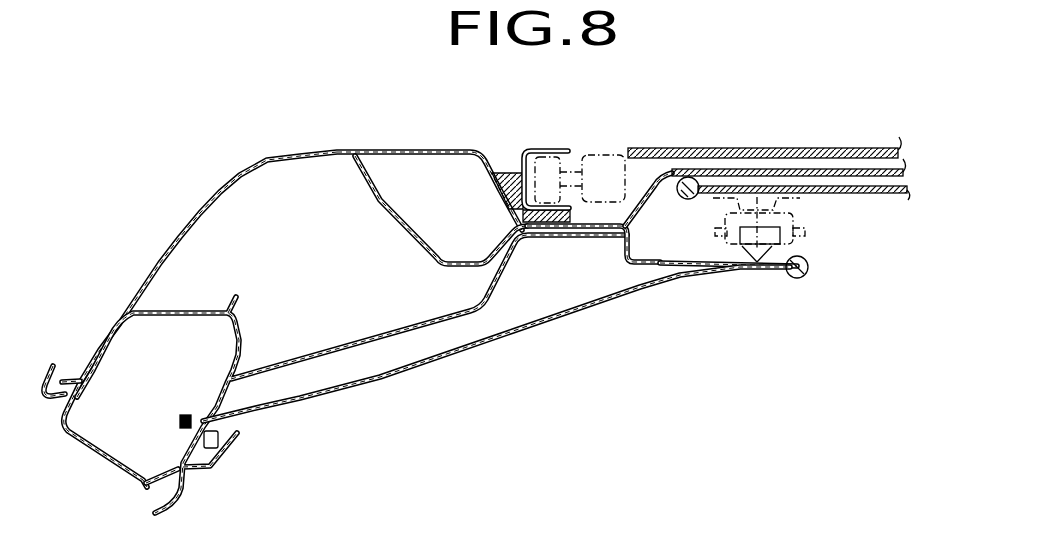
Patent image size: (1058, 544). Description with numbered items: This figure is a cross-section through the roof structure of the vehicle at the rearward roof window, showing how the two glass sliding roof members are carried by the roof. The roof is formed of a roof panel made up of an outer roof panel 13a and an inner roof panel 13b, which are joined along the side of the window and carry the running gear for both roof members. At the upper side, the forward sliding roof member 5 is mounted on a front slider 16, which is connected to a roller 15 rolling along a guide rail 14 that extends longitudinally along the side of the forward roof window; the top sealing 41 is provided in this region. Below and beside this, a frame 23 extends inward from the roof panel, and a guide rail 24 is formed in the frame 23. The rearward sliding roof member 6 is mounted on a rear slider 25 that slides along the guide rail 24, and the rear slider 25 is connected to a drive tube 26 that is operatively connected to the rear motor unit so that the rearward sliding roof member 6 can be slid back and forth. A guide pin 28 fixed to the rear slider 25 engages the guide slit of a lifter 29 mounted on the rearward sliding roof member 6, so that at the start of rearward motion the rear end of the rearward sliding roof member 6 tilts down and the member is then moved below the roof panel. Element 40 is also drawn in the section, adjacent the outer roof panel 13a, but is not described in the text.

The forward sliding roof member 5 is at (847, 148).
The rearward sliding roof member 6 is at (905, 193).
The outer roof panel 13a is at (303, 156).
The inner roof panel 13b is at (336, 347).
The guide rail 14 is at (555, 150).
The roller 15 is at (537, 158).
The front slider 16 is at (620, 155).
The frame 23 is at (626, 258).
The guide rail 24 is at (723, 270).
The rear slider 25 is at (810, 247).
The drive tube 26 is at (753, 253).
The guide pin 28 is at (716, 233).
The lifter 29 is at (800, 211).
The reinforcing panel 40 is at (408, 231).
The top sealing 41 is at (513, 332).